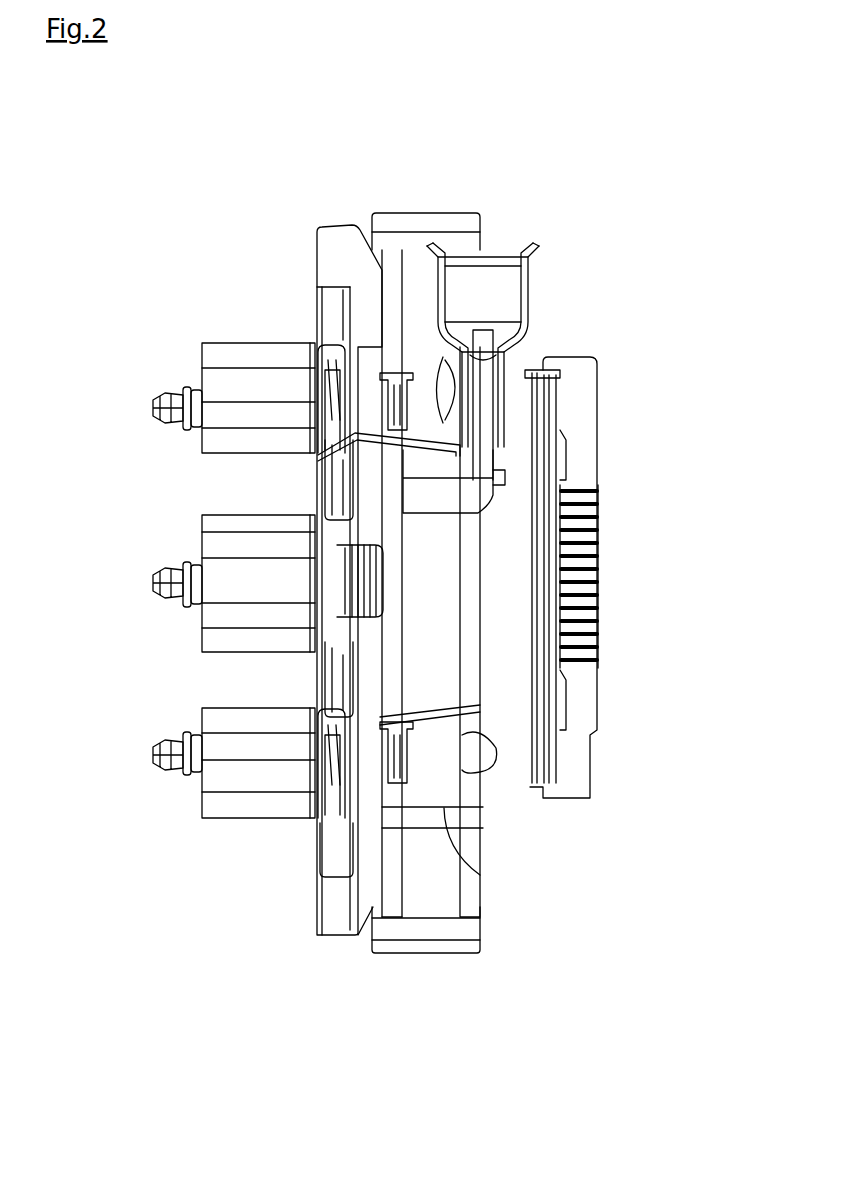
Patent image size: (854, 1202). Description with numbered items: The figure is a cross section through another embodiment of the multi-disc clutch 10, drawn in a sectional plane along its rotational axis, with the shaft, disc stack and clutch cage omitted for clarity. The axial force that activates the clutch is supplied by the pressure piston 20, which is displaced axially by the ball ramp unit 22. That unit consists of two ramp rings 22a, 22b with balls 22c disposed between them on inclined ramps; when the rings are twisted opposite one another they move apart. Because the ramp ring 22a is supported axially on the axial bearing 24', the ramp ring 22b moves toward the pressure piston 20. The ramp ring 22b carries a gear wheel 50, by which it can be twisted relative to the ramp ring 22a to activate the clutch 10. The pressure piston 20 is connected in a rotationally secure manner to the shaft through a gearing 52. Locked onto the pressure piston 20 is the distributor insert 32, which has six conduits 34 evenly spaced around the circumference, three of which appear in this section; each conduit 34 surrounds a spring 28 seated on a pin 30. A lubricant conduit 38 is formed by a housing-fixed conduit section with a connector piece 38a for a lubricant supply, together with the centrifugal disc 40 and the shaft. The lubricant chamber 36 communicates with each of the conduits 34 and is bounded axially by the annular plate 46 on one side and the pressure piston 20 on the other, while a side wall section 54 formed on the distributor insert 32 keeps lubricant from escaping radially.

The multi-disc clutch 10 is at (519, 182).
The pressure piston 20 is at (331, 226).
The ball ramp unit 22 is at (510, 838).
The ramp ring 22a is at (525, 815).
The ramp ring 22b is at (444, 808).
The balls 22c is at (481, 759).
The axial bearing 24' is at (606, 577).
The springs 28 is at (183, 392).
The pins 30 is at (153, 401).
The distributor insert 32 is at (219, 292).
The conduits 34 is at (204, 343).
The lubricant chamber 36 is at (329, 370).
The lubricant conduit 38 is at (506, 394).
The connector piece 38a is at (534, 308).
The centrifugal disc 40 is at (318, 460).
The annular plate 46 is at (318, 678).
The gear wheel 50 is at (433, 955).
The gearing 52 is at (387, 603).
The side wall section 54 is at (336, 830).